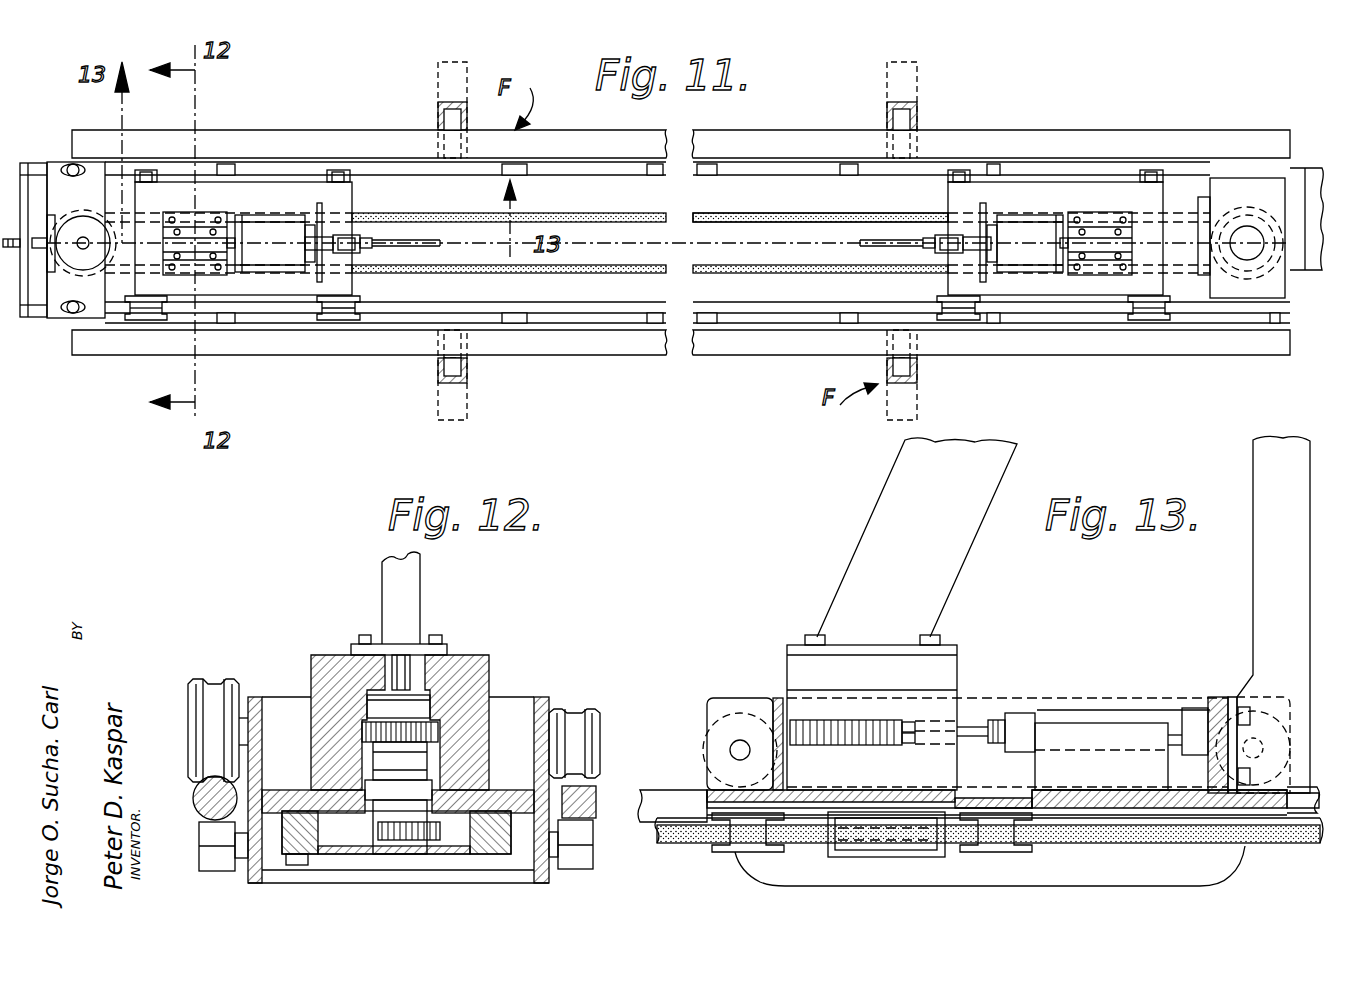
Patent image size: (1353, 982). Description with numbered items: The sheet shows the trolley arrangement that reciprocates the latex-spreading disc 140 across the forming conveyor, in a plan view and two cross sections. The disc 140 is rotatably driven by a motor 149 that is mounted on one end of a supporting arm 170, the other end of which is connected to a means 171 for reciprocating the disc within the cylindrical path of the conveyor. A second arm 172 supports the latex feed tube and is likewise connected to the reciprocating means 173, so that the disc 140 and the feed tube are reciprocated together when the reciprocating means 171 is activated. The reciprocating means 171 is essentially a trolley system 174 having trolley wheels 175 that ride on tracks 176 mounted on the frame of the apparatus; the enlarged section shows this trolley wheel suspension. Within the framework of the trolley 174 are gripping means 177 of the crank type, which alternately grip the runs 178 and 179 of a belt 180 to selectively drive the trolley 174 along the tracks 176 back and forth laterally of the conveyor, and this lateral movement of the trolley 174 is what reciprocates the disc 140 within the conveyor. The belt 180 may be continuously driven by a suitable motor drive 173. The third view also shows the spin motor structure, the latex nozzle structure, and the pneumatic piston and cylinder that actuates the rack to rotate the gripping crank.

In FIG. 11, the rotating disc 140 is at (330, 225).
In FIG. 11, the motor 149 is at (649, 243).
In FIG. 11, the supporting arm 170 is at (188, 235).
In FIG. 12, the supporting arm 170 is at (408, 566).
In FIG. 13, the supporting arm 170 is at (888, 510).
In FIG. 11, the reciprocating means 171 is at (290, 192).
In FIG. 12, the reciprocating means 171 is at (545, 647).
In FIG. 13, the reciprocating means 171 is at (1120, 672).
In FIG. 11, the second arm 172 is at (360, 255).
In FIG. 13, the second arm 172 is at (1257, 575).
In FIG. 11, the motor drive 173 is at (1242, 185).
In FIG. 11, the trolley system 174 is at (240, 190).
In FIG. 12, the trolley system 174 is at (270, 698).
In FIG. 11, the trolley wheels 175 is at (147, 170).
In FIG. 12, the trolley wheels 175 is at (207, 680).
In FIG. 13, the trolley wheels 175 is at (768, 668).
In FIG. 11, the tracks 176 is at (37, 168).
In FIG. 12, the tracks 176 is at (197, 812).
In FIG. 13, the tracks 176 is at (680, 795).
In FIG. 12, the gripping means 177 is at (368, 850).
In FIG. 13, the gripping means 177 is at (895, 850).
In FIG. 11, the belt run 178 is at (688, 202).
In FIG. 12, the belt run 178 is at (480, 847).
In FIG. 13, the belt run 178 is at (1155, 843).
In FIG. 11, the belt run 179 is at (688, 257).
In FIG. 12, the belt run 179 is at (330, 840).
In FIG. 11, the belt 180 is at (840, 214).
In FIG. 13, the belt 180 is at (1068, 850).